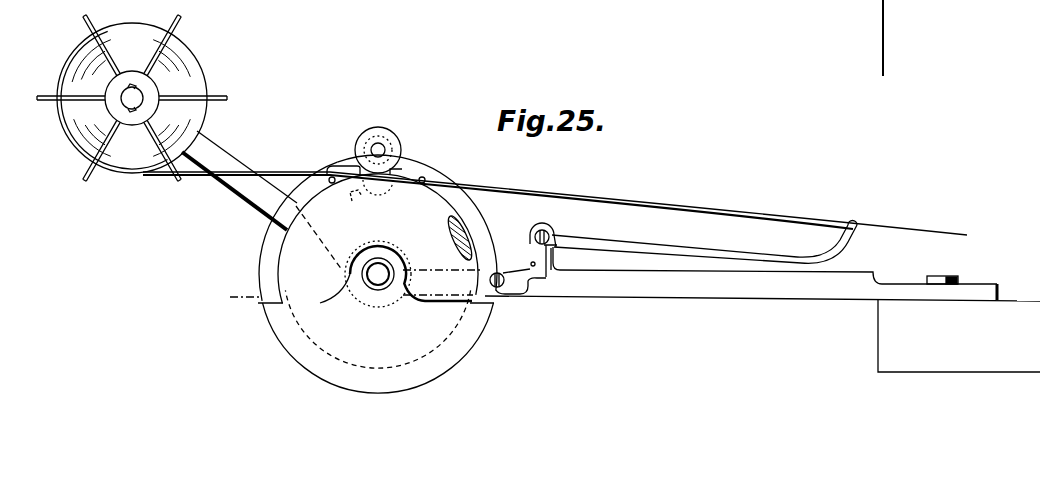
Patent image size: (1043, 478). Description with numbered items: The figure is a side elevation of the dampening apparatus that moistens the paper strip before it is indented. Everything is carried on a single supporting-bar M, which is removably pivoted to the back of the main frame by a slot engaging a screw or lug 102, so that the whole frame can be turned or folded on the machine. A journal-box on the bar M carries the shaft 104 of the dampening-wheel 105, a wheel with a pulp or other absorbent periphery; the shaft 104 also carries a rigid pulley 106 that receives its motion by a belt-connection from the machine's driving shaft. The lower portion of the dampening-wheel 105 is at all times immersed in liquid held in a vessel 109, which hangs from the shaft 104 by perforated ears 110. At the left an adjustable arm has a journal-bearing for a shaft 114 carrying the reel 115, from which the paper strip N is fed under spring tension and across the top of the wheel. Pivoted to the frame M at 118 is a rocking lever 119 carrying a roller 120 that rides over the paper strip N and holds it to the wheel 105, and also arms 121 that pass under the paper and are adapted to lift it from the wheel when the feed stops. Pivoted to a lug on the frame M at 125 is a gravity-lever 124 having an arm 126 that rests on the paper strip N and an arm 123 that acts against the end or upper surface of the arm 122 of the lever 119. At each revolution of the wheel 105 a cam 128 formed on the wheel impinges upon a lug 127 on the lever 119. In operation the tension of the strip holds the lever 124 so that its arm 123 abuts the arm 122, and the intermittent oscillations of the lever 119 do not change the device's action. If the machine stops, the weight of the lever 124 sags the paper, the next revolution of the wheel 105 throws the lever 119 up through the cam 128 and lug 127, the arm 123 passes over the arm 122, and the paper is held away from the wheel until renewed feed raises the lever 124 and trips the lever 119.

The screw or lug 102 is at (942, 272).
The shaft 104 is at (378, 274).
The dampening-wheel 105 is at (266, 217).
The rigid pulley 106 is at (283, 231).
The vessel 109 is at (462, 340).
The perforated ears 110 is at (396, 281).
The shaft 114 is at (125, 101).
The reel 115 is at (132, 98).
The pivot 118 is at (500, 293).
The rocking lever 119 is at (399, 229).
The roller 120 is at (362, 134).
The arms 121 is at (330, 179).
The arm 122 is at (538, 284).
The arm 123 is at (554, 266).
The gravity-lever 124 is at (676, 248).
The pivot lug 125 is at (550, 232).
The arm 126 is at (859, 226).
The lug 127 is at (387, 196).
The cam 128 is at (357, 206).
The paper strip N is at (555, 203).
The supporting-bar M is at (762, 321).